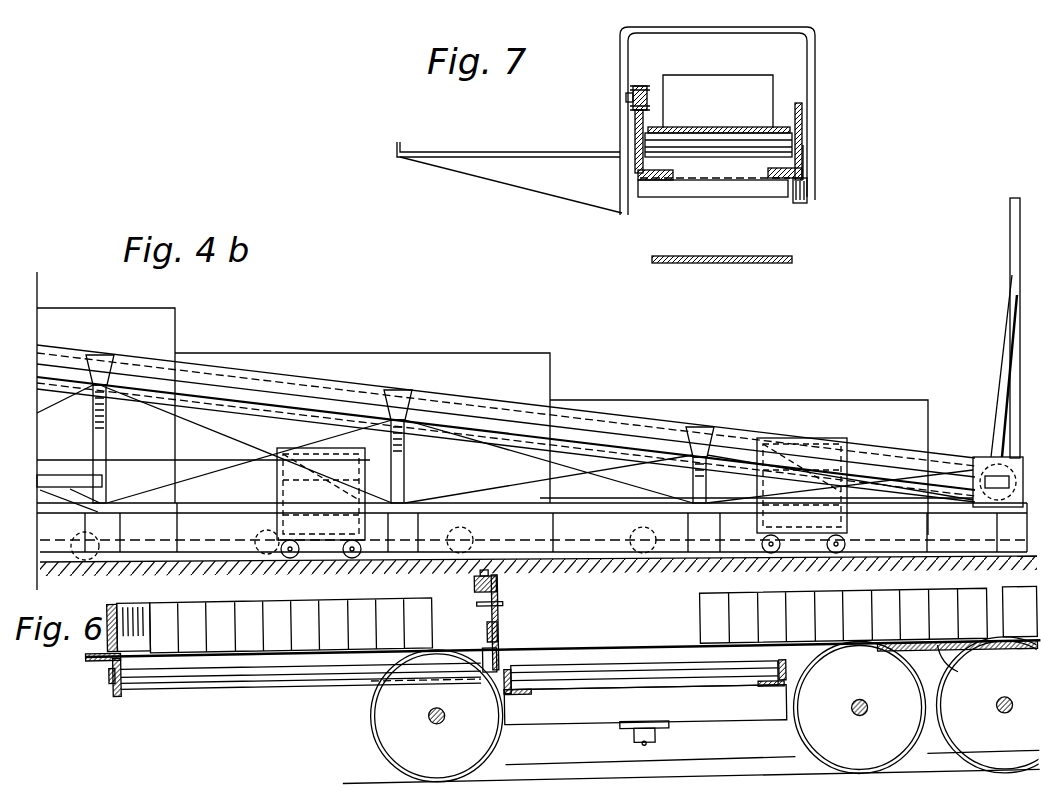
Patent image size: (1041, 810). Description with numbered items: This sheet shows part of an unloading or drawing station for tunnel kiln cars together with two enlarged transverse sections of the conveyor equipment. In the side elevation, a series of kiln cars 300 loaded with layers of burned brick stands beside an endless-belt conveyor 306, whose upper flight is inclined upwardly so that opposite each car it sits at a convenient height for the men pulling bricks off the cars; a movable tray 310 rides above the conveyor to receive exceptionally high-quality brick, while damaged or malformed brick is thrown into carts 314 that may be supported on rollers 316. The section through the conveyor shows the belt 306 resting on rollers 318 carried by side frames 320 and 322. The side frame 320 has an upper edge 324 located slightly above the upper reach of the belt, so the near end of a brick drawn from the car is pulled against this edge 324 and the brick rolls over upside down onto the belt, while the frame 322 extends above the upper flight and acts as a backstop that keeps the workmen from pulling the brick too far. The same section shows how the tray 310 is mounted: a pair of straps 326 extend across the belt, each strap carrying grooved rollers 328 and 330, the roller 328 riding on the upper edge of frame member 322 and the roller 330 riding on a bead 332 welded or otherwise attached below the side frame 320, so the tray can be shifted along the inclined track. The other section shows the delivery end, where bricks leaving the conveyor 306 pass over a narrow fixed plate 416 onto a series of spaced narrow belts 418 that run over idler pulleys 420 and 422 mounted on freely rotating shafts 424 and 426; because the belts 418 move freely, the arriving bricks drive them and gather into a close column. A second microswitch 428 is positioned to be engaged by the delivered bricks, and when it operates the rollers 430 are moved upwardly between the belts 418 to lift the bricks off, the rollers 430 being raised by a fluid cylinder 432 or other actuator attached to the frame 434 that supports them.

In FIG. 4B, the tunnel kiln car 300 is at (40, 538).
In FIG. 7, the conveyor 306 is at (745, 128).
In FIG. 4B, the conveyor 306 is at (176, 367).
In FIG. 6, the conveyor 306 is at (1027, 648).
In FIG. 7, the movable tray 310 is at (478, 150).
In FIG. 4B, the cart 314 is at (277, 494).
In FIG. 4B, the rollers 316 is at (290, 560).
In FIG. 7, the rollers 318 is at (783, 137).
In FIG. 7, the side frame 320 is at (803, 155).
In FIG. 7, the side frame 322 is at (635, 125).
In FIG. 7, the upper edge 324 is at (803, 104).
In FIG. 7, the strap 326 is at (727, 27).
In FIG. 7, the grooved roller 328 is at (631, 90).
In FIG. 7, the grooved roller 330 is at (803, 203).
In FIG. 7, the bead 332 is at (803, 174).
In FIG. 6, the fixed plate 416 is at (946, 681).
In FIG. 6, the narrow belts 418 is at (768, 760).
In FIG. 6, the idler pulley 420 is at (403, 758).
In FIG. 6, the idler pulley 422 is at (893, 748).
In FIG. 6, the shaft 424 is at (428, 716).
In FIG. 6, the shaft 426 is at (875, 675).
In FIG. 6, the second microswitch 428 is at (503, 602).
In FIG. 6, the rollers 430 is at (590, 680).
In FIG. 6, the fluid cylinder 432 is at (634, 740).
In FIG. 6, the frame 434 is at (716, 724).